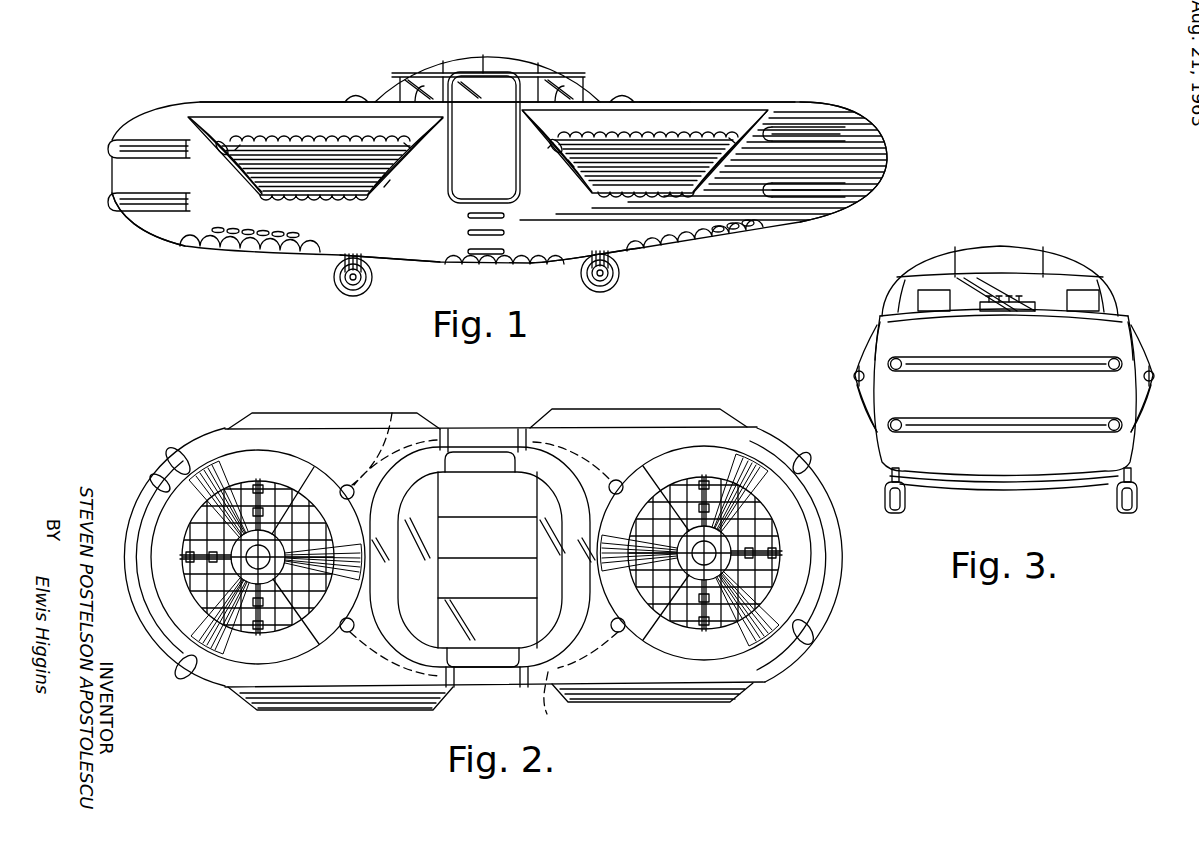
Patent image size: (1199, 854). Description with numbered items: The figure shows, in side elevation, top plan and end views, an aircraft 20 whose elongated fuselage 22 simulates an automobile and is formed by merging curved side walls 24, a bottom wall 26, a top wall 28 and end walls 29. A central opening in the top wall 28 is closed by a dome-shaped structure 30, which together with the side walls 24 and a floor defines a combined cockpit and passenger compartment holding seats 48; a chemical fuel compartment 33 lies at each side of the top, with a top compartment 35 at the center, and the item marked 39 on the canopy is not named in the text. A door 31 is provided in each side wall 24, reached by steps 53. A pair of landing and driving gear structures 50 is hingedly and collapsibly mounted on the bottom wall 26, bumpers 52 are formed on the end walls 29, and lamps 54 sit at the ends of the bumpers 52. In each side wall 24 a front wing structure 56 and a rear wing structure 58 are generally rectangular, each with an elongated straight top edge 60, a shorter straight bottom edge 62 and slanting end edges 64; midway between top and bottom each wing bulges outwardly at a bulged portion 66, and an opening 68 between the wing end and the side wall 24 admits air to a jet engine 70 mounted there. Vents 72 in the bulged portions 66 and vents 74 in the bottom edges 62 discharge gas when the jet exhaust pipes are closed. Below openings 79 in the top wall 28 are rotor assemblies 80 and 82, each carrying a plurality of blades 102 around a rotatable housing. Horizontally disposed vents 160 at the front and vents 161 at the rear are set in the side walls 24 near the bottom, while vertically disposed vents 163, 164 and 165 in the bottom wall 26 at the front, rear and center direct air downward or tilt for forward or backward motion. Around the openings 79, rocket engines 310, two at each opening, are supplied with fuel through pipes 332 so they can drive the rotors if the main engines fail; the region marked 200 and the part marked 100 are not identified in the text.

In FIG. 1, the aircraft 20 is at (120, 136).
In FIG. 1, the fuselage 22 is at (130, 230).
In FIG. 1, the side wall 24 is at (552, 231).
In FIG. 2, the side wall 24 is at (506, 428).
In FIG. 3, the side wall 24 is at (876, 332).
In FIG. 1, the bottom wall 26 is at (372, 260).
In FIG. 1, the top wall 28 is at (200, 102).
In FIG. 2, the top wall 28 is at (308, 450).
In FIG. 1, the end wall 29 is at (112, 173).
In FIG. 2, the end wall 29 is at (140, 498).
In FIG. 3, the end wall 29 is at (1078, 403).
In FIG. 1, the dome-shaped structure 30 is at (498, 58).
In FIG. 2, the dome-shaped structure 30 is at (480, 430).
In FIG. 3, the dome-shaped structure 30 is at (1008, 243).
In FIG. 1, the door 31 is at (474, 157).
In FIG. 1, the chemical fuel compartment 33 is at (428, 66).
In FIG. 2, the chemical fuel compartment 33 is at (487, 619).
In FIG. 1, the top compartment 35 is at (468, 60).
In FIG. 2, the top compartment 35 is at (485, 560).
In FIG. 1, the canopy 39 is at (372, 90).
In FIG. 1, the seats 48 is at (562, 95).
In FIG. 1, the landing and driving gear structure 50 is at (337, 295).
In FIG. 3, the landing and driving gear structure 50 is at (905, 512).
In FIG. 1, the bumper 52 is at (840, 135).
In FIG. 3, the bumper 52 is at (935, 418).
In FIG. 1, the steps 53 is at (468, 232).
In FIG. 1, the lamps 54 is at (186, 160).
In FIG. 2, the lamps 54 is at (176, 450).
In FIG. 3, the lamps 54 is at (893, 372).
In FIG. 1, the front wing structure 56 is at (273, 85).
In FIG. 2, the front wing structure 56 is at (336, 413).
In FIG. 1, the rear wing structure 58 is at (710, 102).
In FIG. 2, the rear wing structure 58 is at (620, 409).
In FIG. 3, the rear wing structure 58 is at (858, 388).
In FIG. 1, the top edge 60 is at (248, 115).
In FIG. 1, the bottom edge 62 is at (278, 200).
In FIG. 1, the slanting end edge 64 is at (240, 160).
In FIG. 1, the bulged portion 66 is at (232, 140).
In FIG. 3, the bulged portion 66 is at (854, 376).
In FIG. 1, the opening 68 is at (258, 185).
In FIG. 1, the jet engine 70 is at (230, 148).
In FIG. 3, the jet engine 70 is at (845, 382).
In FIG. 1, the vents 72 is at (315, 141).
In FIG. 1, the vents 74 is at (325, 198).
In FIG. 1, the openings 79 is at (318, 102).
In FIG. 2, the openings 79 is at (158, 480).
In FIG. 2, the rotor assembly 80 is at (230, 440).
In FIG. 2, the rotor assembly 82 is at (805, 494).
In FIG. 2, the lower cabin hood 100 is at (468, 668).
In FIG. 2, the blades 102 is at (330, 570).
In FIG. 1, the horizontally disposed vents 160 is at (213, 230).
In FIG. 1, the horizontally disposed vents 161 is at (728, 232).
In FIG. 1, the vertically disposed vents 163 is at (222, 249).
In FIG. 1, the vertically disposed vents 164 is at (662, 250).
In FIG. 1, the vertically disposed vents 165 is at (478, 268).
In FIG. 1, the air inlet 200 is at (712, 118).
In FIG. 1, the rocket engine 310 is at (358, 95).
In FIG. 2, the rocket engine 310 is at (347, 484).
In FIG. 2, the fuel supply pipes 332 is at (484, 556).